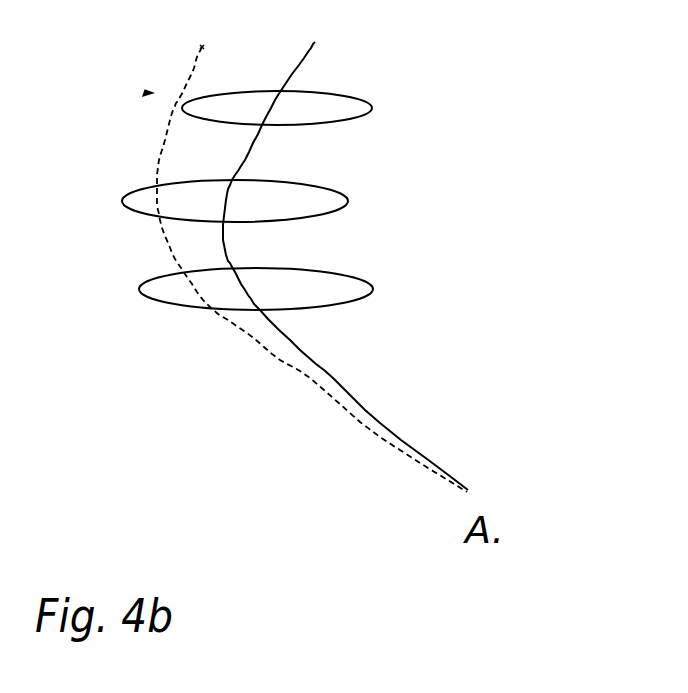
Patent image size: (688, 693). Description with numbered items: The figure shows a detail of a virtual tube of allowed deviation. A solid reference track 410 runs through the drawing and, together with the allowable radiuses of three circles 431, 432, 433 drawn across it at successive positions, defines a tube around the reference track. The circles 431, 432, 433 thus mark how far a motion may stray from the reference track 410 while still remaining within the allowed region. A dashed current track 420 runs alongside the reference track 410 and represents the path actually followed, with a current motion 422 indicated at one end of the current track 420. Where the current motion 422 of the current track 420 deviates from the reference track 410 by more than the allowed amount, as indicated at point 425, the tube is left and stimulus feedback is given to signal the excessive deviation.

The reference track 410 is at (307, 58).
The current track 420 is at (160, 138).
The current motion 422 is at (200, 46).
The point of excessive deviation 425 is at (145, 92).
The circle of allowable radius 431 is at (373, 288).
The circle of allowable radius 432 is at (348, 202).
The circle of allowable radius 433 is at (373, 108).